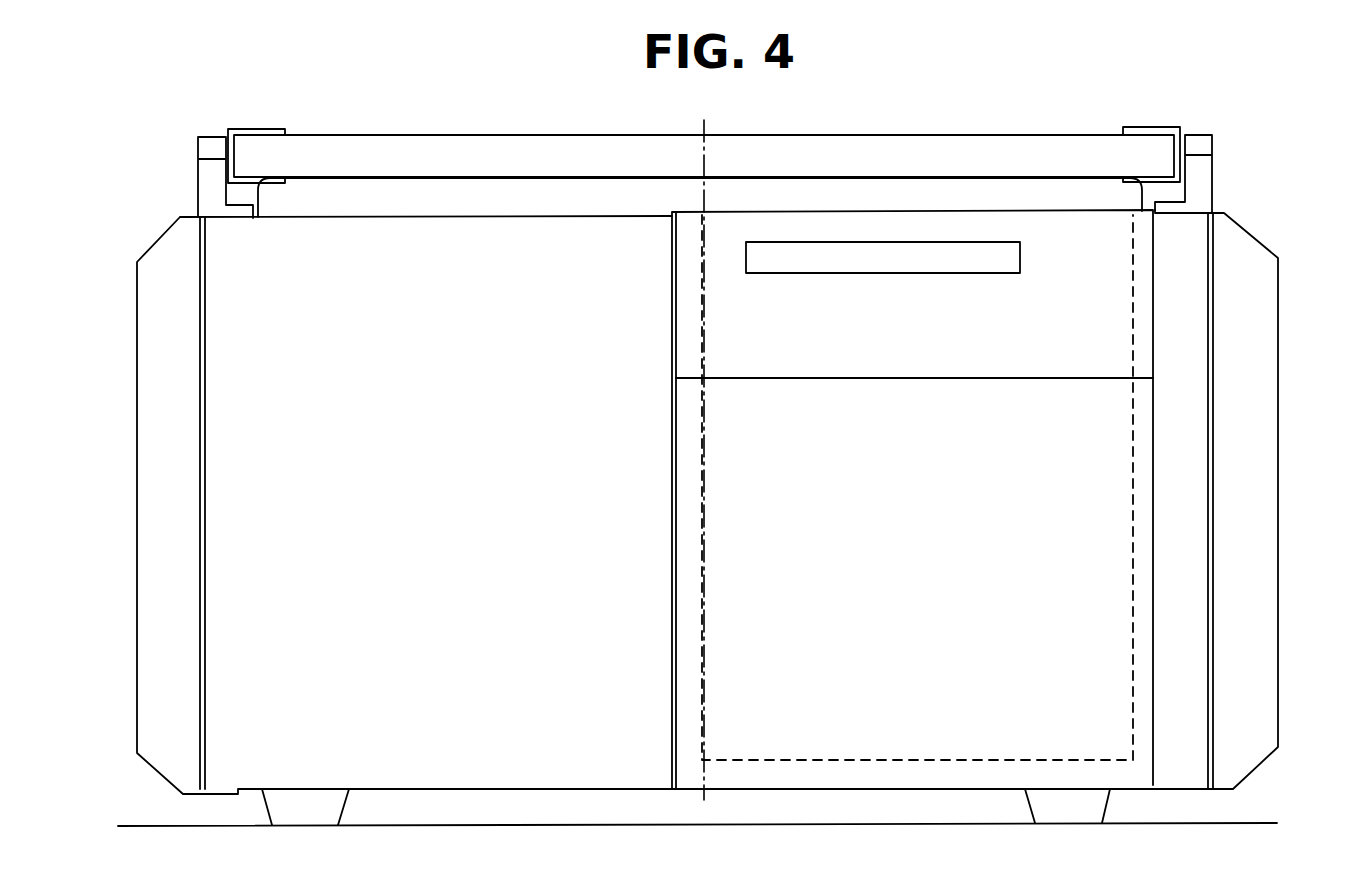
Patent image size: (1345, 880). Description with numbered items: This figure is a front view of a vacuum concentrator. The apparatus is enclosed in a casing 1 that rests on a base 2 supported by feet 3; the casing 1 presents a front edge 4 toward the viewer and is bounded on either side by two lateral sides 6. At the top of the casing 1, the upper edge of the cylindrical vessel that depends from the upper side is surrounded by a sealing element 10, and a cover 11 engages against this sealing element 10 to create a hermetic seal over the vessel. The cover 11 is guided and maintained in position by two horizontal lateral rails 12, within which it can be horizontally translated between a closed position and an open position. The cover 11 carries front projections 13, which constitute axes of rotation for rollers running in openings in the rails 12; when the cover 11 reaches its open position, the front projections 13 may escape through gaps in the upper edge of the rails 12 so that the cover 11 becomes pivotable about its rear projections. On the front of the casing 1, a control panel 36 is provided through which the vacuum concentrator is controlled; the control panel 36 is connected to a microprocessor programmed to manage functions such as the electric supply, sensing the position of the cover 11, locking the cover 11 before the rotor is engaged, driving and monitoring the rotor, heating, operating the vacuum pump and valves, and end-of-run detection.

The casing 1 is at (1278, 577).
The base 2 is at (887, 790).
The feet 3 is at (318, 813).
The front edge 4 is at (235, 598).
The lateral sides 6 is at (1278, 380).
The sealing element 10 is at (498, 193).
The cover 11 is at (933, 147).
The horizontal lateral rails 12 is at (194, 173).
The front projections 13 is at (257, 128).
The control panel 36 is at (838, 361).